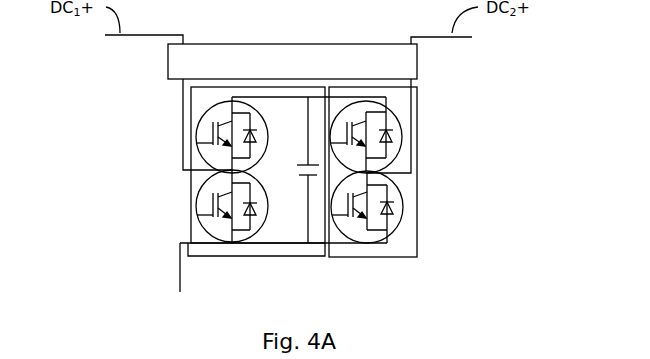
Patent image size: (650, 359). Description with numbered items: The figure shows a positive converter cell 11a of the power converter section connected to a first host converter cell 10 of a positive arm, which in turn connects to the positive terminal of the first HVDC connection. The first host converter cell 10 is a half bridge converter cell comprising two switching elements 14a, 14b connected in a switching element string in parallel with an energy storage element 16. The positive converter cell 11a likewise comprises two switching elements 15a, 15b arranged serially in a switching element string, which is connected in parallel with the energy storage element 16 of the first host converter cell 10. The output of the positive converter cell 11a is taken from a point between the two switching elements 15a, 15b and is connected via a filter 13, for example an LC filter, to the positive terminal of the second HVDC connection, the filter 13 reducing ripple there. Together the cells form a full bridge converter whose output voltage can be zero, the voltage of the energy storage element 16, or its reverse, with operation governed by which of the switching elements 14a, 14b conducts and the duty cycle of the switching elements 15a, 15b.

The filter 13 is at (304, 71).
The first host converter cell 10 is at (190, 200).
The positive converter cell 11a is at (418, 178).
The first switching element 14a is at (191, 172).
The second switching element 14b is at (268, 218).
The first switching element 15a is at (404, 146).
The second switching element 15b is at (404, 215).
The energy storage element 16 is at (313, 178).